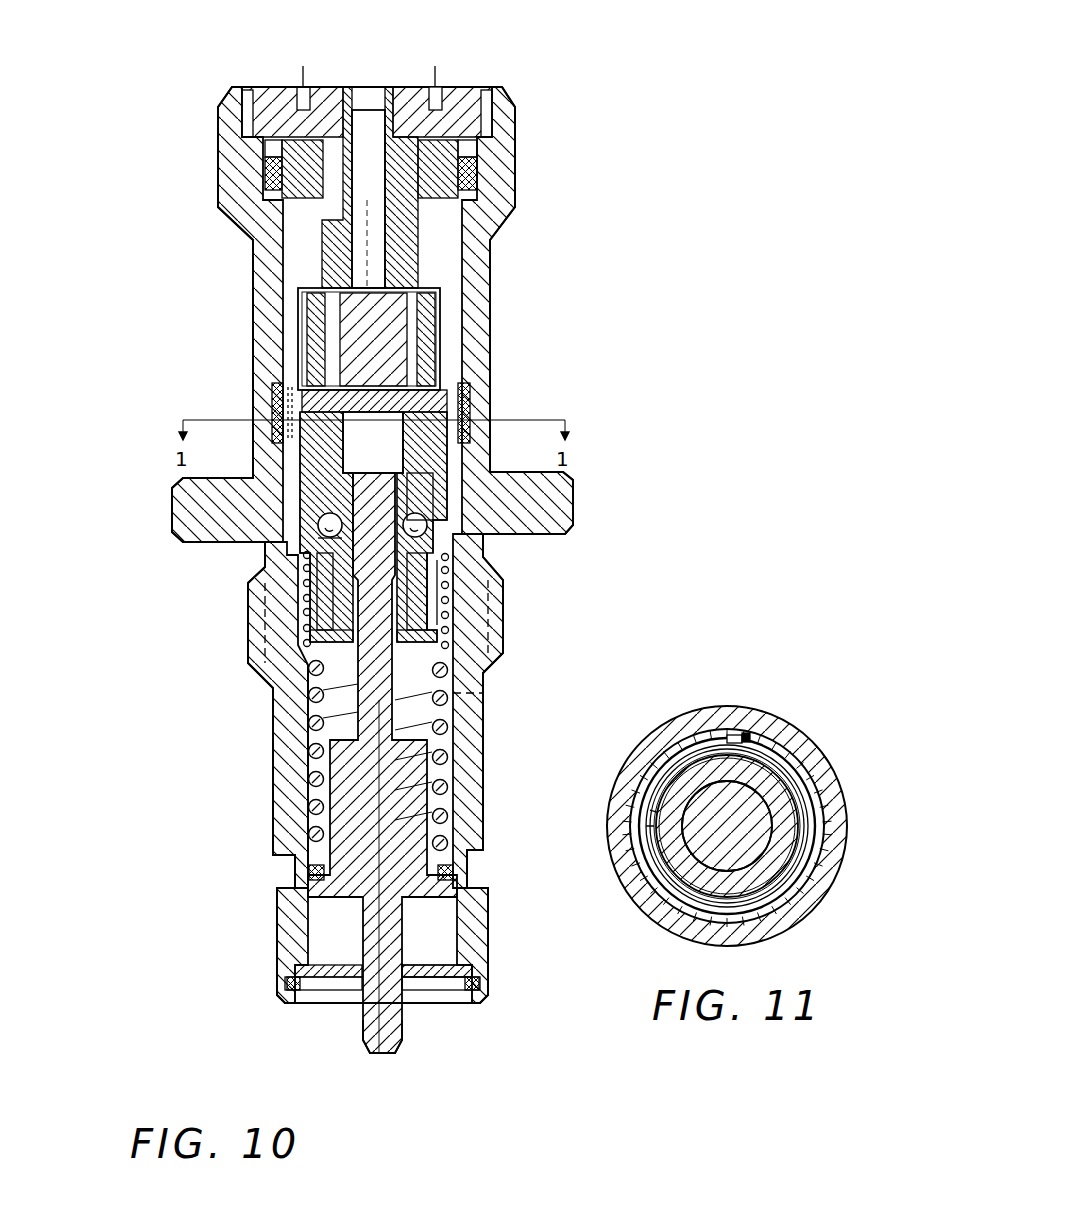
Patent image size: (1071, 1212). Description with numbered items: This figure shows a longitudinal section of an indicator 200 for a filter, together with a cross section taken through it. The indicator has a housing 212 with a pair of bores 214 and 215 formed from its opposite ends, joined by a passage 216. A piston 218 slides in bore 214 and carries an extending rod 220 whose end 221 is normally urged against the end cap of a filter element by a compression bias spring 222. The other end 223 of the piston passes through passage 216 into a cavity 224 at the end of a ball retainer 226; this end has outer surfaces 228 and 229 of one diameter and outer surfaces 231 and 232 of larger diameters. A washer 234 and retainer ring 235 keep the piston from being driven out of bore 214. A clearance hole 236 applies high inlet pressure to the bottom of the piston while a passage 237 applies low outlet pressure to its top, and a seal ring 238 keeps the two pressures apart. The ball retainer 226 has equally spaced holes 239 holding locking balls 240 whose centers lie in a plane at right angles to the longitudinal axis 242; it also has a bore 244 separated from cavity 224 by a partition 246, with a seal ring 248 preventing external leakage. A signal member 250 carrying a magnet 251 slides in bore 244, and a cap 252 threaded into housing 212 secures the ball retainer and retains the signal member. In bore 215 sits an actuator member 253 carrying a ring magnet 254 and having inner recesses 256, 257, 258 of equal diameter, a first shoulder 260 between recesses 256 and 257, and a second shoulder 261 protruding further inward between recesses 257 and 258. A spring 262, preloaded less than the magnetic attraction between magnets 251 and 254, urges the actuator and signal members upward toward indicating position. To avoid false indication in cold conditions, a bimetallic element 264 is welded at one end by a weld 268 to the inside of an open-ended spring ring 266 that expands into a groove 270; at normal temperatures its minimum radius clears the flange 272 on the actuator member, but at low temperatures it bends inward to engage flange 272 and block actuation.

In FIG. 10, the indicator 200 is at (429, 1075).
In FIG. 10, the housing 212 is at (217, 118).
In FIG. 10, the bore 214 is at (310, 710).
In FIG. 10, the bore 215 is at (286, 252).
In FIG. 10, the passage 216 is at (272, 690).
In FIG. 10, the piston 218 is at (308, 765).
In FIG. 10, the rod 220 is at (290, 920).
In FIG. 10, the end 221 is at (365, 1050).
In FIG. 10, the compression bias spring 222 is at (308, 793).
In FIG. 10, the end 223 is at (434, 497).
In FIG. 10, the cavity 224 is at (396, 474).
In FIG. 10, the ball retainer 226 is at (418, 413).
In FIG. 10, the outer surface 228 is at (318, 508).
In FIG. 10, the outer surface 229 is at (306, 612).
In FIG. 10, the outer surface 231 is at (308, 552).
In FIG. 10, the outer surface 232 is at (304, 568).
In FIG. 10, the washer 234 is at (317, 963).
In FIG. 10, the retainer ring 235 is at (292, 984).
In FIG. 10, the passage or clearance hole 236 is at (403, 977).
In FIG. 10, the passage 237 is at (483, 693).
In FIG. 10, the seal ring 238 is at (308, 872).
In FIG. 10, the holes 239 is at (322, 518).
In FIG. 10, the locking balls 240 is at (318, 525).
In FIG. 10, the longitudinal axis 242 is at (365, 85).
In FIG. 10, the bore 244 is at (267, 150).
In FIG. 10, the partition 246 is at (295, 410).
In FIG. 10, the seal ring 248 is at (268, 182).
In FIG. 10, the signal member 250 is at (372, 85).
In FIG. 10, the magnet 251 is at (392, 290).
In FIG. 10, the cap 252 is at (453, 85).
In FIG. 10, the actuator member 253 is at (443, 305).
In FIG. 11, the actuator member 253 is at (782, 819).
In FIG. 10, the ring magnet 254 is at (428, 333).
In FIG. 10, the inner recess 256 is at (470, 540).
In FIG. 10, the inner recess 257 is at (449, 572).
In FIG. 10, the inner recess 258 is at (448, 600).
In FIG. 10, the first shoulder 260 is at (430, 535).
In FIG. 10, the second shoulder 261 is at (437, 588).
In FIG. 10, the spring 262 is at (438, 630).
In FIG. 10, the bimetallic element 264 is at (277, 378).
In FIG. 11, the bimetallic element 264 is at (647, 835).
In FIG. 11, the open-ended ring 266 is at (735, 737).
In FIG. 11, the weld 268 is at (745, 742).
In FIG. 10, the groove 270 is at (282, 404).
In FIG. 11, the groove 270 is at (642, 752).
In FIG. 10, the flange 272 is at (450, 435).
In FIG. 11, the flange 272 is at (793, 797).